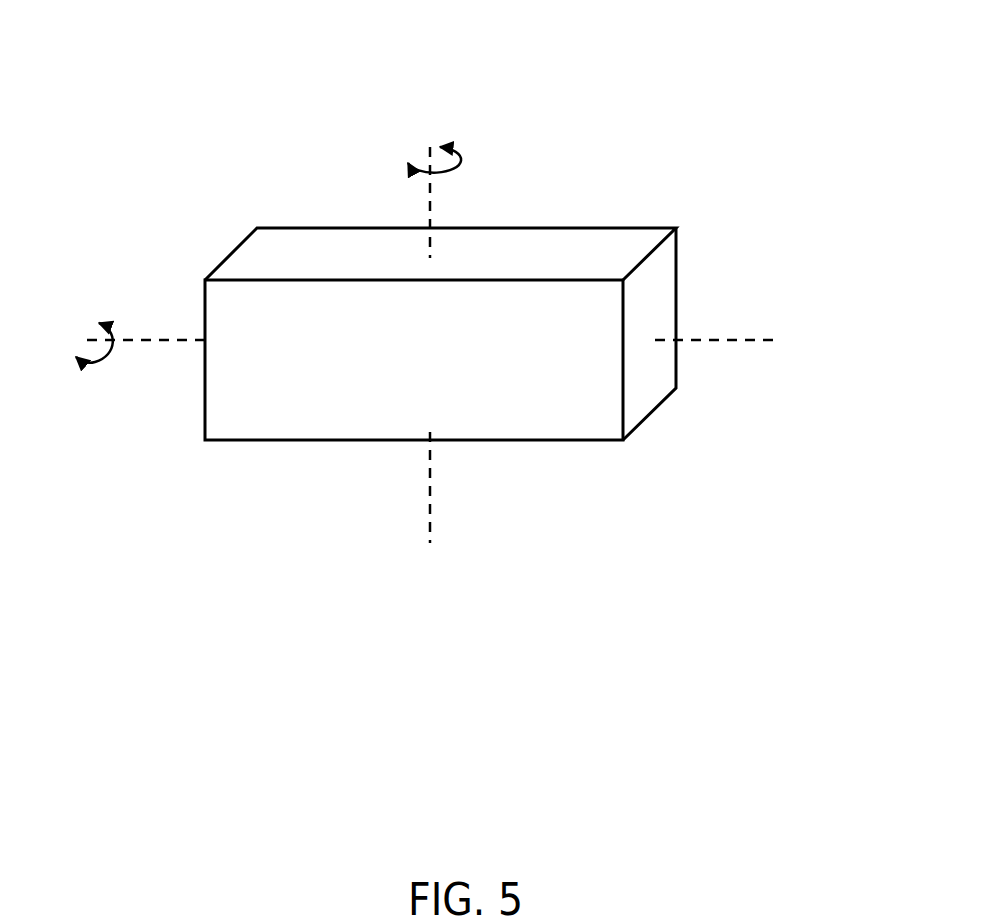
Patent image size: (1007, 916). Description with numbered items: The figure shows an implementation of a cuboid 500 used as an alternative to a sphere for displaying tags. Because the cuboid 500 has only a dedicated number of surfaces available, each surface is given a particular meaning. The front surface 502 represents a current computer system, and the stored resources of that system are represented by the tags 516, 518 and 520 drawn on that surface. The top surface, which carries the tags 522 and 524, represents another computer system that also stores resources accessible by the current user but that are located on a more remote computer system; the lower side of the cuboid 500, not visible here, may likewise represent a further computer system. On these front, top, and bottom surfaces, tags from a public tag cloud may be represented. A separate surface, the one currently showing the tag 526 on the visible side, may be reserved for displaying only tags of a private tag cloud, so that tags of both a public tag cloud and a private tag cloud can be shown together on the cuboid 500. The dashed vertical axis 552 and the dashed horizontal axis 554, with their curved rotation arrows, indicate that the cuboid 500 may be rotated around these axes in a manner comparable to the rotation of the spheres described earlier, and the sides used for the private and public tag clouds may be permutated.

The cuboid 500 is at (557, 85).
The surface 502 is at (268, 428).
The tag 516 is at (250, 345).
The tag 518 is at (352, 340).
The tag 520 is at (578, 343).
The tag 522 is at (304, 238).
The tag 524 is at (534, 238).
The tag 526 is at (684, 370).
The axis 552 is at (434, 504).
The axis 554 is at (750, 333).